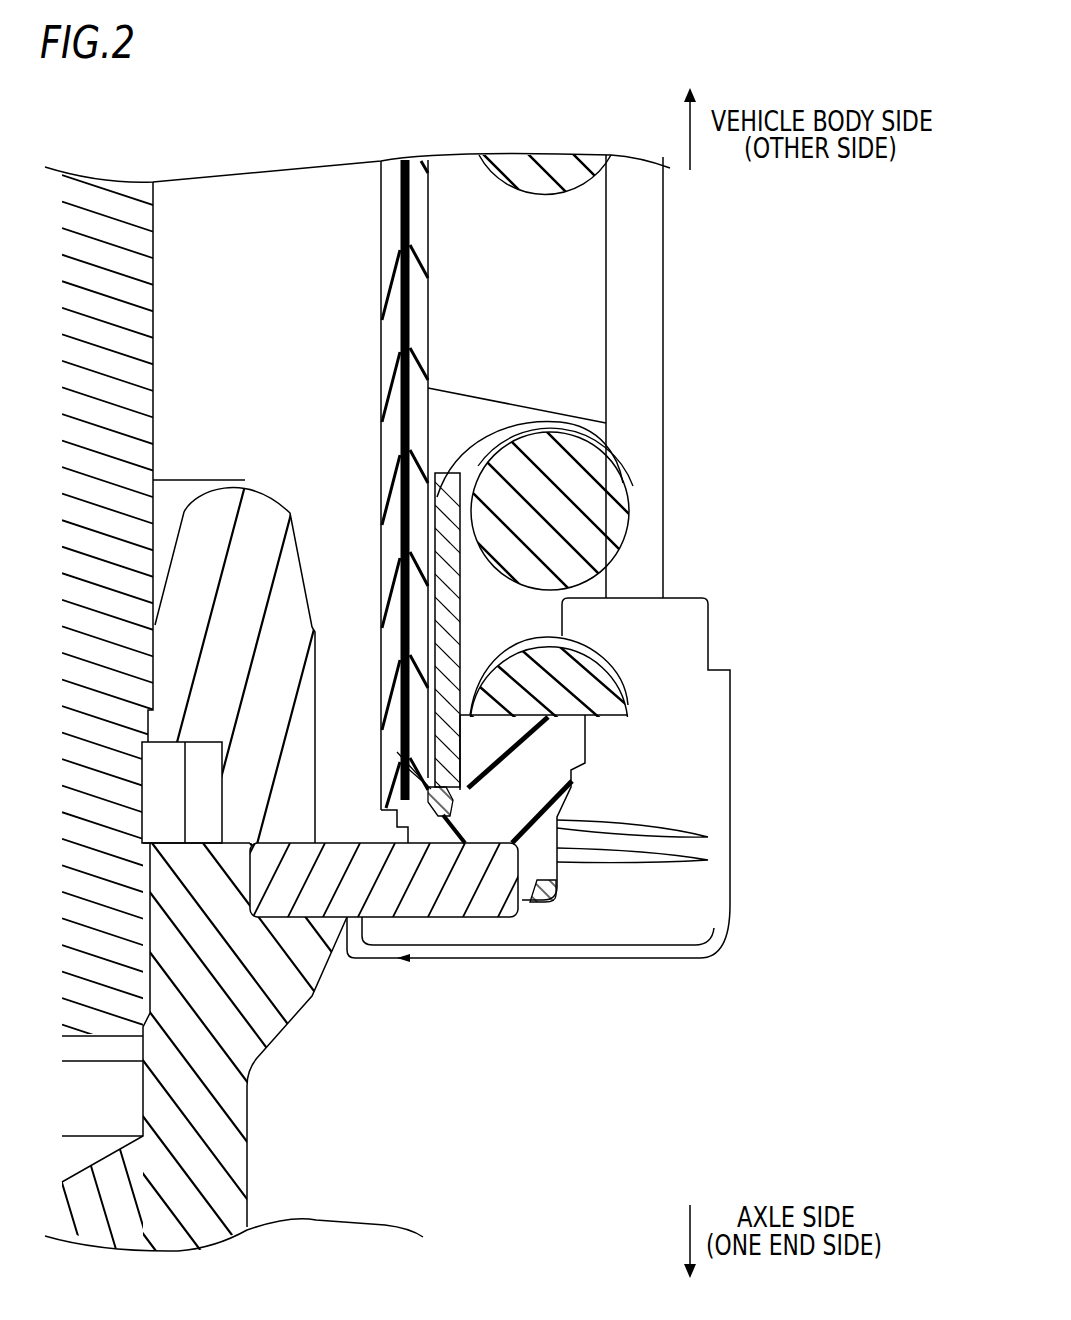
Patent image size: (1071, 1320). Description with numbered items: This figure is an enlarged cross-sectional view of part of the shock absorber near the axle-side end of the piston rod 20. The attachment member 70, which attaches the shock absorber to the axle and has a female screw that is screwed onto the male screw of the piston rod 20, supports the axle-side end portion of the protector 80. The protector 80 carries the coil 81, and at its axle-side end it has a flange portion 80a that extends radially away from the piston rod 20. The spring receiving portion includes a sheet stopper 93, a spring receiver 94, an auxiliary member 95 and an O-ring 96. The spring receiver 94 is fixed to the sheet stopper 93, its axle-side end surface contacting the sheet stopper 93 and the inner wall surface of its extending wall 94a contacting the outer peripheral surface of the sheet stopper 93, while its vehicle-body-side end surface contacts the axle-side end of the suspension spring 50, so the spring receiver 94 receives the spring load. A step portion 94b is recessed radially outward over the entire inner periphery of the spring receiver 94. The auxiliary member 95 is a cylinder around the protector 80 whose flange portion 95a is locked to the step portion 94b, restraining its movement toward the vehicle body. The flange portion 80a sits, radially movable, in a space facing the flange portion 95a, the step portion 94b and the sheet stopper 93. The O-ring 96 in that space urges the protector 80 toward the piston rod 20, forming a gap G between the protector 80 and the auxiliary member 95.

The piston rod 20 is at (85, 937).
The suspension spring 50 is at (553, 513).
The attachment member 70 is at (212, 1103).
The protector 80 is at (447, 251).
The flange portion 80a is at (448, 828).
The coil 81 is at (415, 188).
The sheet stopper 93 is at (458, 887).
The spring receiver 94 is at (566, 893).
The extending wall 94a is at (543, 890).
The step portion 94b is at (470, 713).
The auxiliary member 95 is at (565, 421).
The flange portion 95a is at (468, 787).
The O-ring 96 is at (452, 807).
The gap G is at (468, 467).